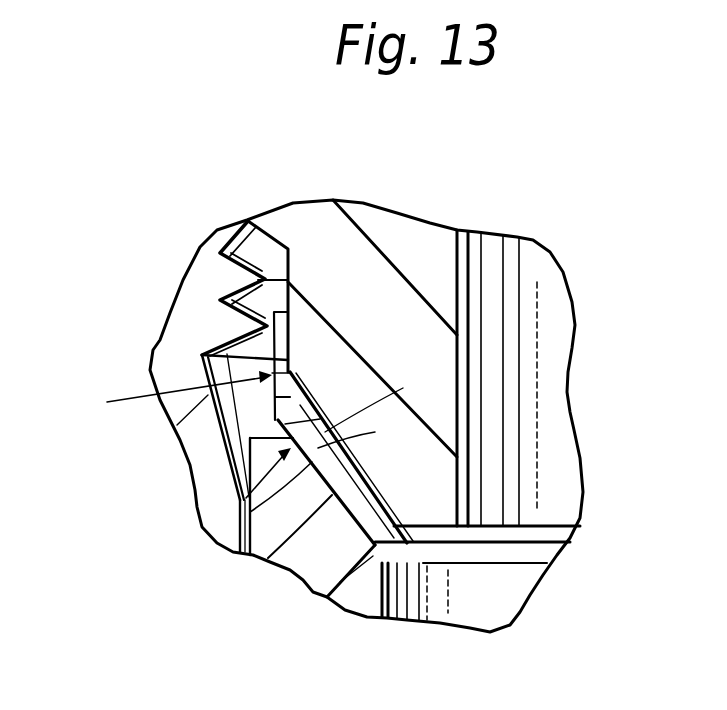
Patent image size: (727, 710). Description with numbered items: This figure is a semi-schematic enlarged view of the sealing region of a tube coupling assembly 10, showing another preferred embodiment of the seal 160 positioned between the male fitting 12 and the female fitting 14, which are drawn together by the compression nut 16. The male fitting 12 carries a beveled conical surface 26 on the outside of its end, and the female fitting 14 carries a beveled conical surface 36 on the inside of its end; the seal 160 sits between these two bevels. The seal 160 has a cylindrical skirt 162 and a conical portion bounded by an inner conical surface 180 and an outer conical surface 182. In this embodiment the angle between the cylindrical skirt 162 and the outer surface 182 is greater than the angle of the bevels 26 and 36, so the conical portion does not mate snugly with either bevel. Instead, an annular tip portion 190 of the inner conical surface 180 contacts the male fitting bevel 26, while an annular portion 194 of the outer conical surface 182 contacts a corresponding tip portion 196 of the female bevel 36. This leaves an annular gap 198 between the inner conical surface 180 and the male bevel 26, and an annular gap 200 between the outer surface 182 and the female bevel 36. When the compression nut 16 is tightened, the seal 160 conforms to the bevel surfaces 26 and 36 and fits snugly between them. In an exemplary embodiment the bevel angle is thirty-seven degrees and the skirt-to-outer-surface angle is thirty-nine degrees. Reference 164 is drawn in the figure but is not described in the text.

The tube coupling assembly 10 is at (189, 256).
The male fitting 12 is at (280, 201).
The female fitting 14 is at (322, 568).
The compression nut 16 is at (172, 335).
The beveled conical surface 26 is at (371, 369).
The beveled conical surface 36 is at (380, 563).
The seal 160 is at (167, 395).
The cylindrical skirt 162 is at (290, 351).
The curved surface 164 is at (328, 490).
The inner conical surface 180 is at (366, 432).
The outer conical surface 182 is at (250, 439).
The annular tip portion 190 is at (372, 510).
The annular portion 194 is at (225, 478).
The tip portion 196 is at (238, 508).
The annular gap 198 is at (300, 398).
The annular gap 200 is at (363, 550).